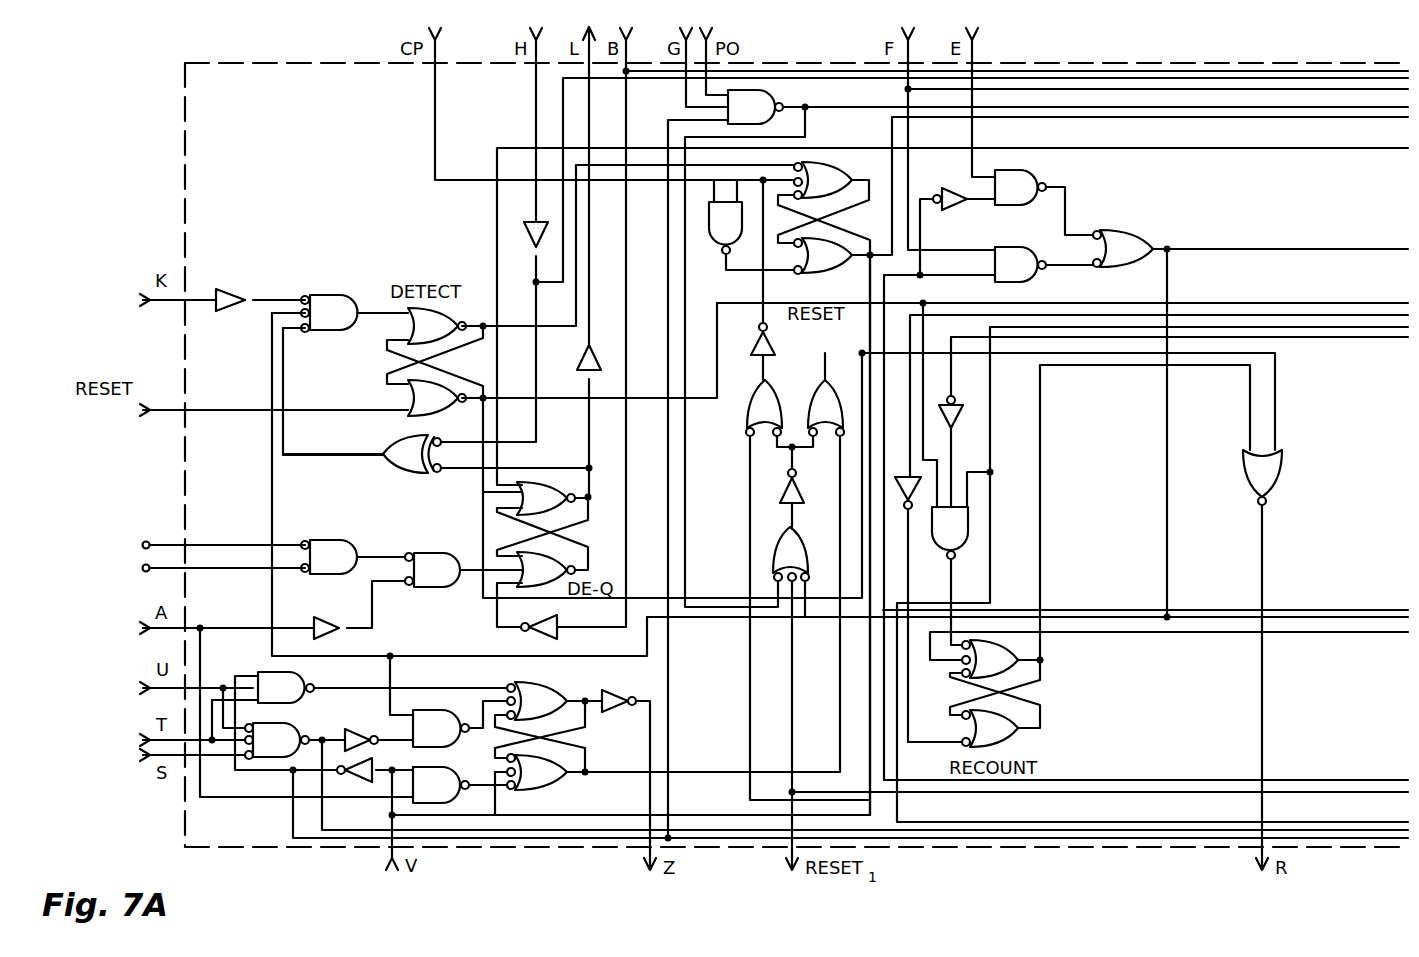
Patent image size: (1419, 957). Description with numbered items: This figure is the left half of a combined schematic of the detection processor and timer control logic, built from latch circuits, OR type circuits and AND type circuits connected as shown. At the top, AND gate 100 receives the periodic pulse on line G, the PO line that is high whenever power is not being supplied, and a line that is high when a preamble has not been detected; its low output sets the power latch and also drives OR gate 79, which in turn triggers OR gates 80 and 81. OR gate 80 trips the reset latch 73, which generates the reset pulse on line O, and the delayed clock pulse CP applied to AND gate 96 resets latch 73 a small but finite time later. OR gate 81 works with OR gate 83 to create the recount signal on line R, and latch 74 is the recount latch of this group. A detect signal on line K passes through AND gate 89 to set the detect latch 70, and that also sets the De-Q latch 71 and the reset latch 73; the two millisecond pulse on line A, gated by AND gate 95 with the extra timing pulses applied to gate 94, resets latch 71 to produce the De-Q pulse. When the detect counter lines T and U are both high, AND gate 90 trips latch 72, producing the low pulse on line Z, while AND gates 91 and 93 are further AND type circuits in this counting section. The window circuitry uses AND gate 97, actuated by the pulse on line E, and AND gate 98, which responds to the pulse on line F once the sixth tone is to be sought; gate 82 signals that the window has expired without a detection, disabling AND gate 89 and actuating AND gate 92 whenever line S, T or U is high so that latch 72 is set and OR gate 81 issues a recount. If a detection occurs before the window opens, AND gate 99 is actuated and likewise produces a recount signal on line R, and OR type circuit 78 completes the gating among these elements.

The detect latch 70 is at (372, 364).
The De-Q latch 71 is at (585, 535).
The latch 72 is at (588, 740).
The reset latch 73 is at (852, 275).
The latch circuit 74 is at (1051, 697).
The OR type circuit 78 is at (435, 472).
The OR gate 79 is at (800, 540).
The OR gate 80 is at (749, 413).
The OR gate 81 is at (823, 380).
The gate 82 is at (1140, 243).
The OR gate 83 is at (1250, 475).
The AND gate 89 is at (334, 300).
The AND gate 90 is at (311, 687).
The AND type circuit 91 is at (296, 730).
The AND gate 92 is at (460, 731).
The AND type circuit 93 is at (422, 789).
The gate 94 is at (344, 546).
The AND gate 95 is at (447, 549).
The AND gate 96 is at (720, 262).
The AND gate 97 is at (1037, 180).
The AND gate 98 is at (1028, 253).
The AND gate 99 is at (946, 557).
The AND gate 100 is at (776, 101).